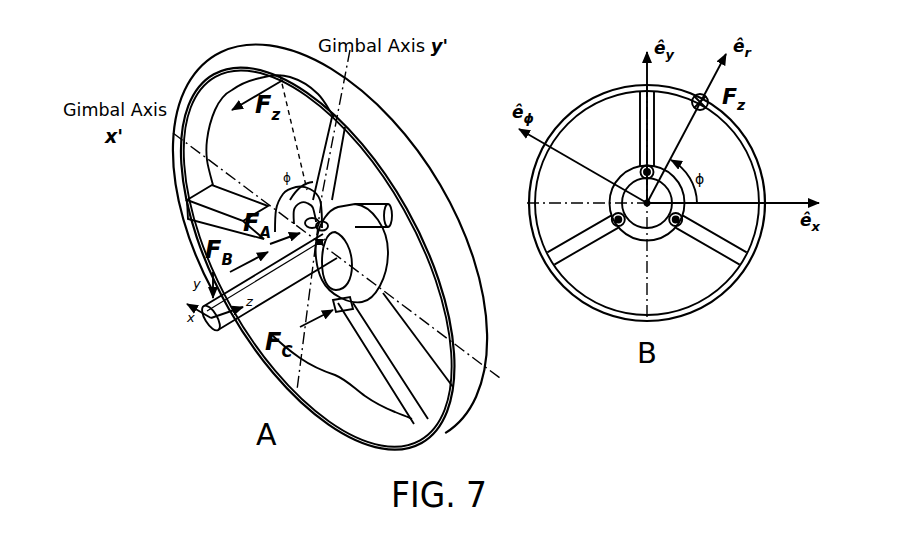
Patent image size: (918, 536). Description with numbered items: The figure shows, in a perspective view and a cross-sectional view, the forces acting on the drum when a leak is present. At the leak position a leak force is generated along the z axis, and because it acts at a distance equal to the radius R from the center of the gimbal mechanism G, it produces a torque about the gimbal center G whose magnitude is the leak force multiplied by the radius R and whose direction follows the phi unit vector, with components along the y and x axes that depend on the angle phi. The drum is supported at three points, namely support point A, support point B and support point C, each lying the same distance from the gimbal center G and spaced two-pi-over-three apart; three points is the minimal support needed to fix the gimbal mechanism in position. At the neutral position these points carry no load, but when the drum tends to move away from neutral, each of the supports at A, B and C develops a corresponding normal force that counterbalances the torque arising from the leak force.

The center of the gimbal mechanism G is at (307, 260).
The radius to the leak position R is at (684, 115).
The support point A is at (633, 162).
The support point B is at (616, 238).
The support point C is at (675, 238).